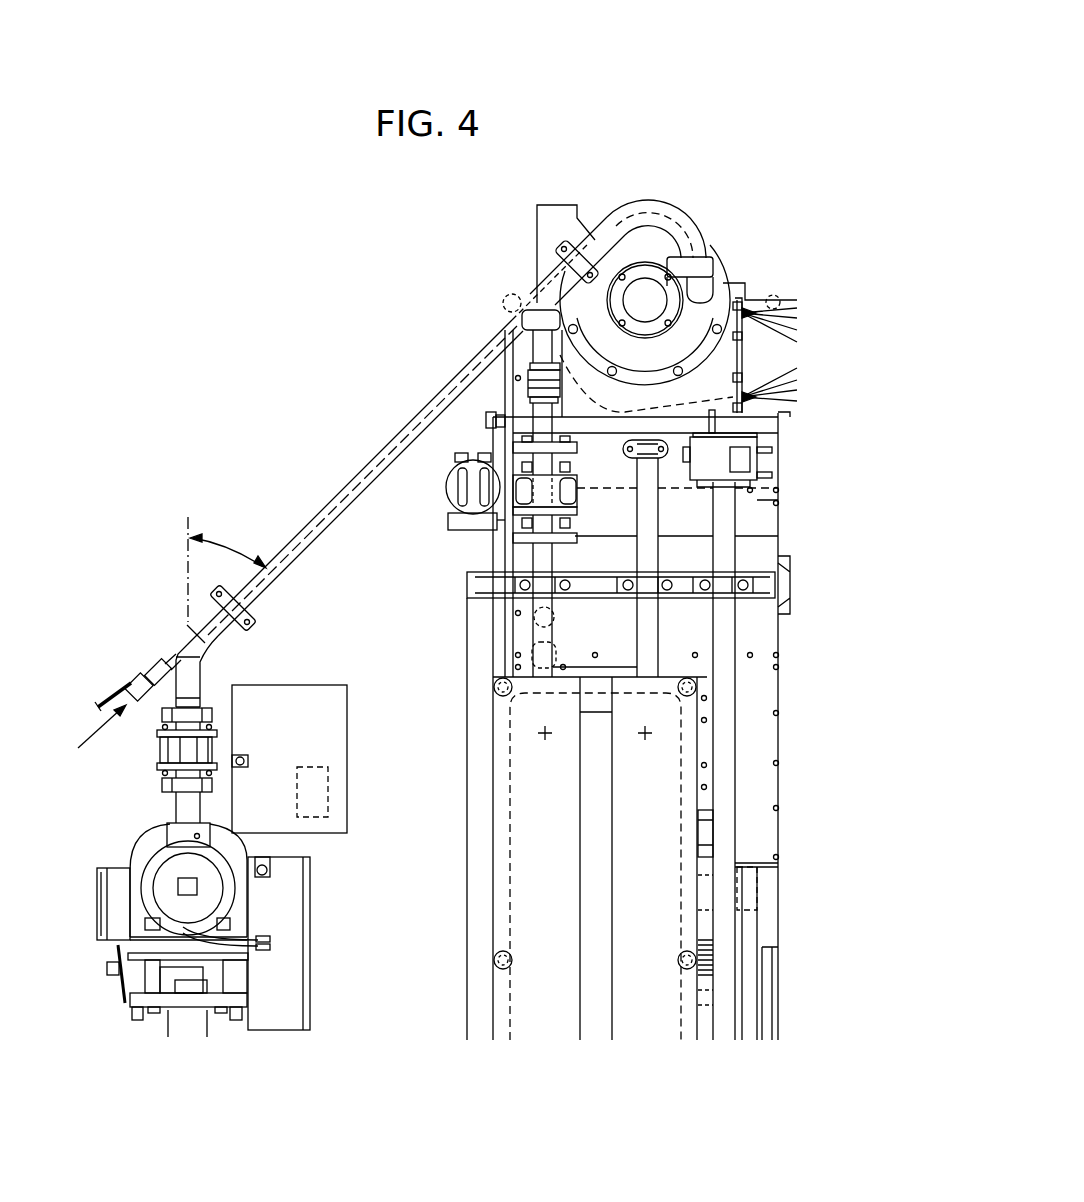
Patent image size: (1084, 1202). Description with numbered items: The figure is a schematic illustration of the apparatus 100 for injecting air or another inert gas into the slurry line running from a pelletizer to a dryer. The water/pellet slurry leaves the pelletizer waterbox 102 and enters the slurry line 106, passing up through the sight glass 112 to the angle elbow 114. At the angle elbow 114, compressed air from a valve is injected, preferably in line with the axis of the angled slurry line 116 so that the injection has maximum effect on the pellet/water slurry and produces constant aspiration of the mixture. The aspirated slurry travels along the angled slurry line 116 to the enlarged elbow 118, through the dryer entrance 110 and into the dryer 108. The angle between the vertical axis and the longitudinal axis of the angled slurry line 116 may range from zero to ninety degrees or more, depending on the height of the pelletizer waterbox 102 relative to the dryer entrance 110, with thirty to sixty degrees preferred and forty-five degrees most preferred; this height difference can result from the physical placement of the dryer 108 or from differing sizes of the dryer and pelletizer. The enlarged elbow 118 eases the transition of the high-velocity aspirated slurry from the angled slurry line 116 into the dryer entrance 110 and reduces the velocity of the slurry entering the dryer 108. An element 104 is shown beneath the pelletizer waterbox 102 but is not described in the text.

The pneumatic conveying system 100 is at (338, 418).
The pelletizer waterbox 102 is at (140, 860).
The blower outlet pipe 104 is at (202, 1027).
The slurry line 106 is at (178, 804).
The dryer 108 is at (763, 740).
The dryer entrance 110 is at (714, 282).
The sight glass 112 is at (200, 748).
The angle elbow 114 is at (187, 638).
The angled slurry line 116 is at (357, 472).
The enlarged elbow 118 is at (643, 201).